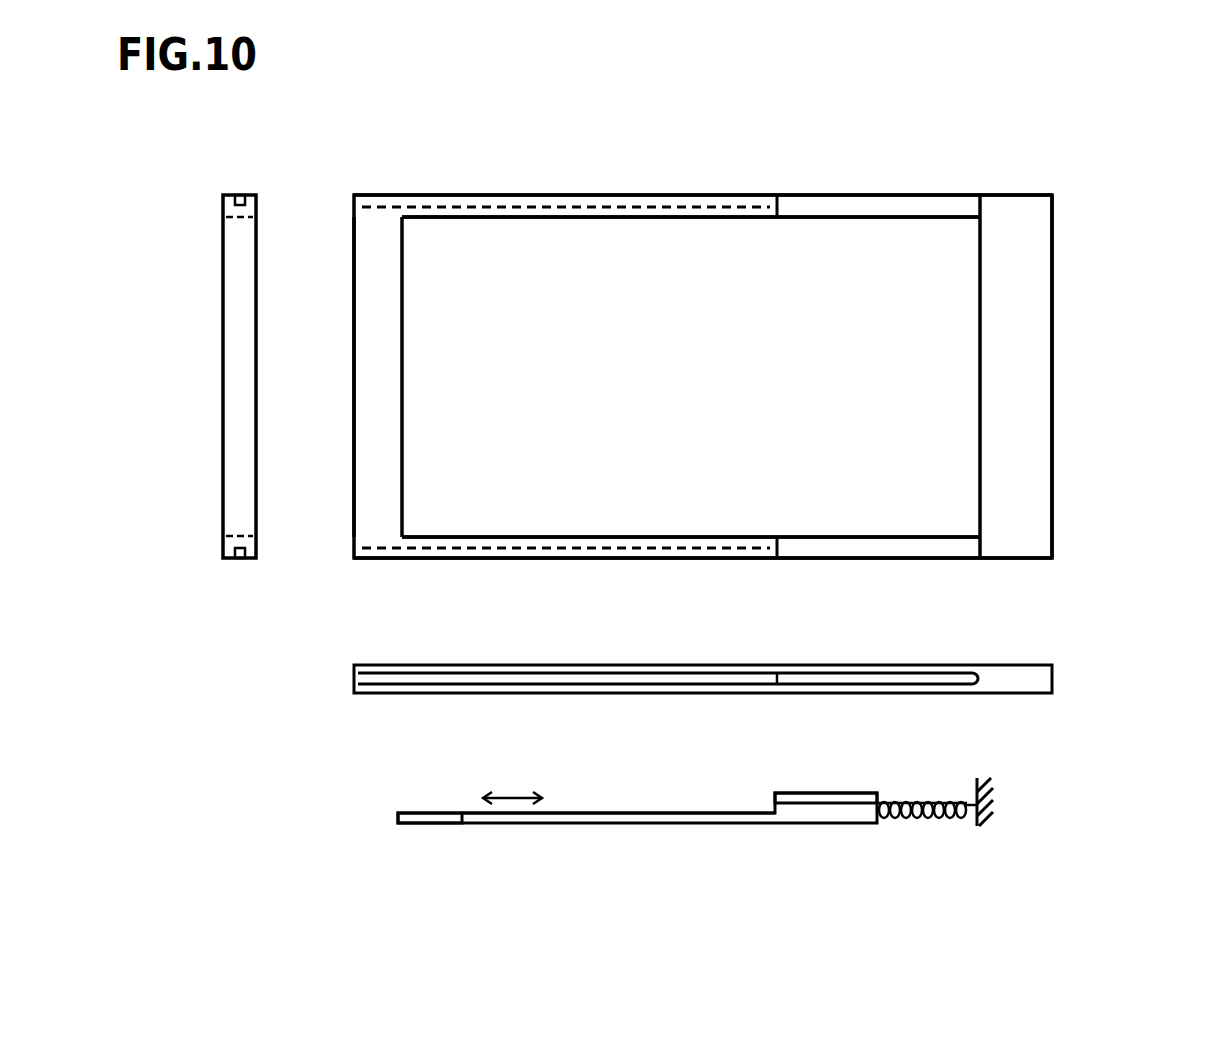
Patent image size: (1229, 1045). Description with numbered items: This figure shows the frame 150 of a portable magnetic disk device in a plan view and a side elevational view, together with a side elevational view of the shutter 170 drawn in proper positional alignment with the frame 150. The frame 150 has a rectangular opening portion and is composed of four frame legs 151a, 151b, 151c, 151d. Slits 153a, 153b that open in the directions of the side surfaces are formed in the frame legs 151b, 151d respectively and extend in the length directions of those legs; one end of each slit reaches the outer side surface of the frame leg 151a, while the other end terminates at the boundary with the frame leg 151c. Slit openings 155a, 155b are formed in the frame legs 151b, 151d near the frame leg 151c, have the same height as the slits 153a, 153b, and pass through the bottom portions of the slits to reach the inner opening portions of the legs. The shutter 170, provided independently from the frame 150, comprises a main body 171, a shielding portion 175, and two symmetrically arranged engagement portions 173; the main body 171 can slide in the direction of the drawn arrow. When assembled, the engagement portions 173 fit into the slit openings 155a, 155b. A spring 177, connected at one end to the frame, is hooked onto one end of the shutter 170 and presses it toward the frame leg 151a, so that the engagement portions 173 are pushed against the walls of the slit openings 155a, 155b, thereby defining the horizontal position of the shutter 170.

The frame 150 is at (1075, 288).
The frame leg 151a is at (355, 395).
The frame leg 151b is at (713, 195).
The frame leg 151c is at (1052, 393).
The frame leg 151d is at (710, 560).
The slit 153a is at (243, 195).
The slit 153b is at (237, 560).
The slit opening 155a is at (857, 220).
The slit opening 155b is at (840, 532).
The shutter 170 is at (677, 830).
The main body 171 is at (525, 823).
The engagement portion 173 is at (817, 793).
The shielding portion 175 is at (418, 823).
The spring 177 is at (915, 800).